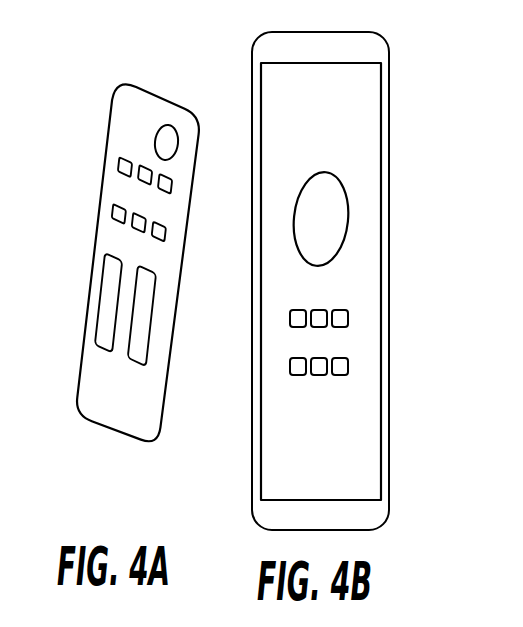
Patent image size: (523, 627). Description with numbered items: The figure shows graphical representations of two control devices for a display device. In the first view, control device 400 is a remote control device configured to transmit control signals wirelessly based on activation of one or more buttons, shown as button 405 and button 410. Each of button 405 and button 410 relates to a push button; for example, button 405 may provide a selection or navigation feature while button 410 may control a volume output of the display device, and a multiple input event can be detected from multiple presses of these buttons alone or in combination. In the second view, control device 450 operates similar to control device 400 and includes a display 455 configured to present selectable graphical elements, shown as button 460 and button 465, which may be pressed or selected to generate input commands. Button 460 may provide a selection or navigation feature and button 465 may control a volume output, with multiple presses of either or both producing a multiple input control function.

In FIG. 4A, the control device 400 is at (88, 93).
In FIG. 4A, the button 405 is at (110, 212).
In FIG. 4A, the button 410 is at (103, 280).
In FIG. 4B, the control device 450 is at (387, 117).
In FIG. 4B, the display 455 is at (363, 220).
In FIG. 4B, the button 460 is at (338, 310).
In FIG. 4B, the button 465 is at (328, 173).